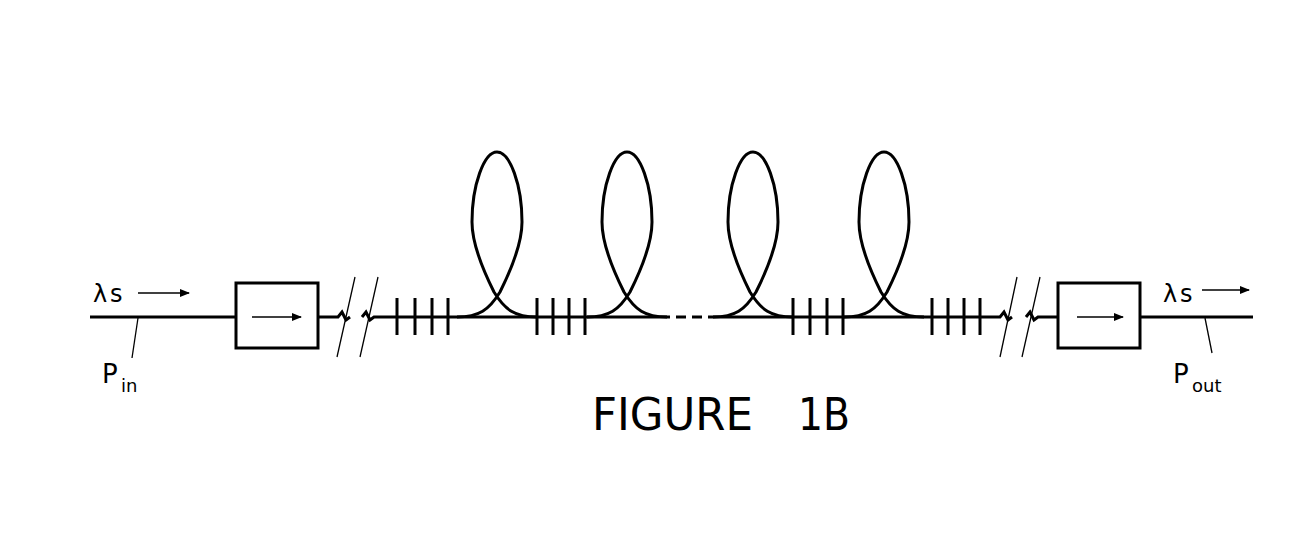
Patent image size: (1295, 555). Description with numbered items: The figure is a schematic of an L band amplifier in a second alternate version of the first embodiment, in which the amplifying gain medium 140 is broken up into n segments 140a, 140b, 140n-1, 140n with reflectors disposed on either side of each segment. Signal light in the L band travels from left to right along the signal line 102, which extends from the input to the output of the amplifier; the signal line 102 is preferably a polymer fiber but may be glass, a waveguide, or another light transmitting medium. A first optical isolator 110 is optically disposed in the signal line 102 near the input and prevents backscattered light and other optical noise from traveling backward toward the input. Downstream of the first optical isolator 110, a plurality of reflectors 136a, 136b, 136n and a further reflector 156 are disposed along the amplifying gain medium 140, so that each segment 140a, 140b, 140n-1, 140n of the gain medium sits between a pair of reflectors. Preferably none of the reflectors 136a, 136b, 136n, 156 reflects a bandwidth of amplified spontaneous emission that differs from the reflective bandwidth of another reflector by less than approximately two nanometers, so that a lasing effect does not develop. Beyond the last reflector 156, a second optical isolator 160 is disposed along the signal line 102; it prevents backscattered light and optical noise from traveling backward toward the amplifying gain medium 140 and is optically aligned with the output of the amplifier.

The signal line 102 is at (205, 318).
The first optical isolator 110 is at (270, 283).
The reflector 136a is at (413, 298).
The reflector 136b is at (568, 298).
The reflector 136n is at (810, 298).
The amplifying gain medium 140 is at (940, 105).
The first segment of amplifying gain medium 140a is at (498, 150).
The second segment of amplifying gain medium 140b is at (628, 150).
The (n-1)th segment of amplifying gain medium 140n-1 is at (755, 150).
The nth segment of amplifying gain medium 140n is at (887, 150).
The reflector 156 is at (964, 298).
The second optical isolator 160 is at (1108, 283).